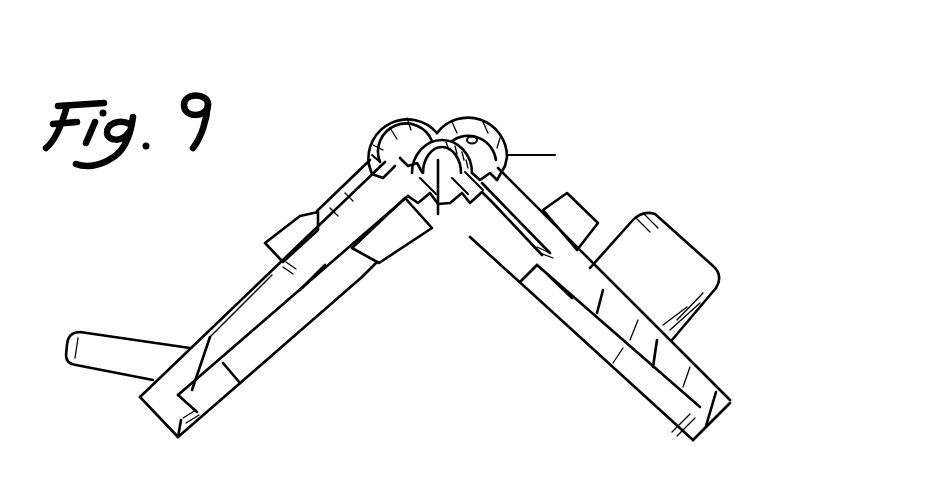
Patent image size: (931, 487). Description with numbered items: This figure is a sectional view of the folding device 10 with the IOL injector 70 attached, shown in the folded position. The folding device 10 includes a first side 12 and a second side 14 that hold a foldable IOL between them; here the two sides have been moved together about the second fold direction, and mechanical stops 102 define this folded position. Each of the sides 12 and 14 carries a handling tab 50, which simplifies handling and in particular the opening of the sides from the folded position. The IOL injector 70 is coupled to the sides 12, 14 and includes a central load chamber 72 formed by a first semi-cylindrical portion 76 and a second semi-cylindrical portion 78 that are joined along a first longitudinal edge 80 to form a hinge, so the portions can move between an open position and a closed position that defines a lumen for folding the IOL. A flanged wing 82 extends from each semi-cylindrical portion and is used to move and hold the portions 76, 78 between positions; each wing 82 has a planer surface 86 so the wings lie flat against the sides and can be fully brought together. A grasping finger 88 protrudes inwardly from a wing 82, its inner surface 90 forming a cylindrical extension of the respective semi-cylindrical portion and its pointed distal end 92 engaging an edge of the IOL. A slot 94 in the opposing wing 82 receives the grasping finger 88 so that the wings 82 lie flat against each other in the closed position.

The folding device 10 is at (225, 262).
The first side 12 is at (168, 405).
The second side 14 is at (730, 400).
The handling tab 50 is at (117, 335).
The IOL injector 70 is at (447, 202).
The central load chamber 72 is at (370, 147).
The first semi-cylindrical portion 76 is at (393, 120).
The second semi-cylindrical portion 78 is at (477, 118).
The first longitudinal edge 80 is at (440, 118).
The wing 82 is at (310, 215).
The planer surface 86 is at (330, 232).
The grasping finger 88 is at (470, 210).
The inner surface 90 is at (555, 155).
The distal end 92 is at (440, 225).
The slot 94 is at (370, 155).
The mechanical stop 102 is at (430, 217).